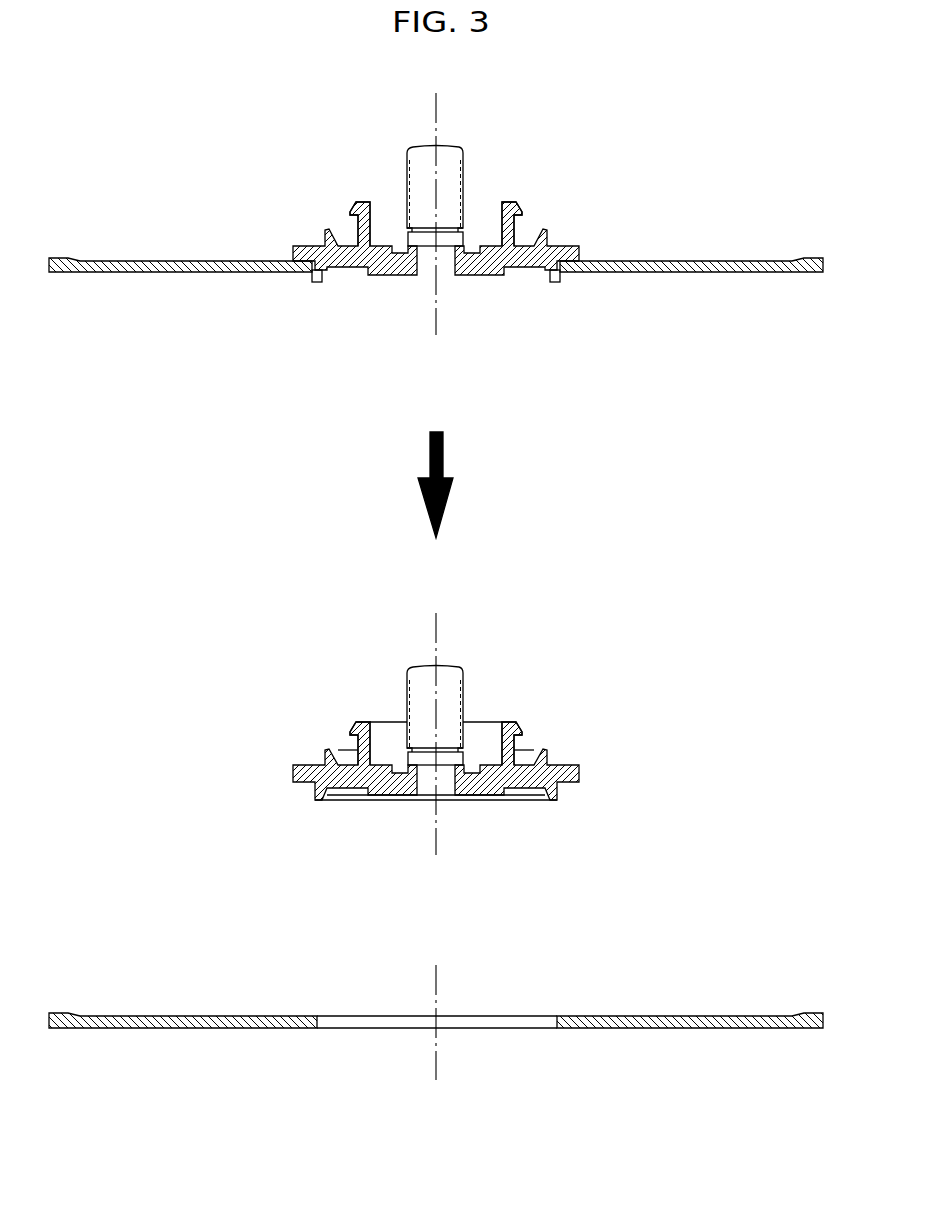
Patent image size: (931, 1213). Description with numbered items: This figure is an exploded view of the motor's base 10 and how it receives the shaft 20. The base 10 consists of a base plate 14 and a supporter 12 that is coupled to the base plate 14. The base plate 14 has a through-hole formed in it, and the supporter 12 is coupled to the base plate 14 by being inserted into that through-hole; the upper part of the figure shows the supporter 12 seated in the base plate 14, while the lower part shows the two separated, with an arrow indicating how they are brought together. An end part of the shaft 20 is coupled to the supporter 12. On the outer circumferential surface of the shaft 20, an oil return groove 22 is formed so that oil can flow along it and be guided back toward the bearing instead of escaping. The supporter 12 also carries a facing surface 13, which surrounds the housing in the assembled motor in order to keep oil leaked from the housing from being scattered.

The base 10 is at (648, 395).
The supporter 12 is at (529, 262).
The facing surface 13 is at (371, 212).
The base plate 14 is at (648, 272).
The shaft 20 is at (453, 153).
The oil return groove 22 is at (465, 232).